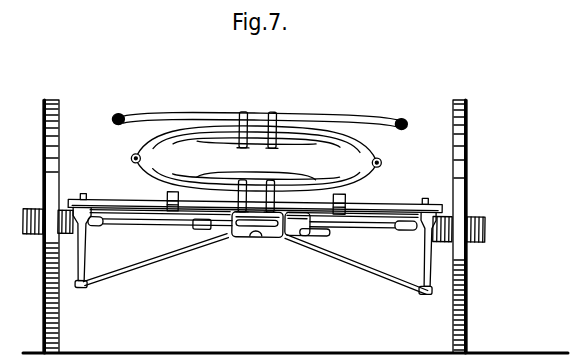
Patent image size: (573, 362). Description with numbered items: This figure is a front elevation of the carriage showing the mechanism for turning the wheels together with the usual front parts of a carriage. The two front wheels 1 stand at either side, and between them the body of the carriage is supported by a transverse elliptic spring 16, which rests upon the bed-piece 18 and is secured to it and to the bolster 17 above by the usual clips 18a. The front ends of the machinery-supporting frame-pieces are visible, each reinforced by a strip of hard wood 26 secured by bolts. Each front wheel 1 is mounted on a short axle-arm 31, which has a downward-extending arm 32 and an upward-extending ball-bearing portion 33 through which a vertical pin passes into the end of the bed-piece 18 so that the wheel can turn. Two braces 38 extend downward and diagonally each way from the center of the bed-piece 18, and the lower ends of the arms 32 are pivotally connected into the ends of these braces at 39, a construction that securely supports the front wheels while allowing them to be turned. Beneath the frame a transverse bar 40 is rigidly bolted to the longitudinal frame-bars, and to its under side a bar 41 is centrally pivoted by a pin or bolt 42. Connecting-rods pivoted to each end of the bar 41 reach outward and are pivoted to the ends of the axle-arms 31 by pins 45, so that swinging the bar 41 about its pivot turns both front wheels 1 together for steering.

The front wheels 1 is at (47, 274).
The transverse elliptic spring 16 is at (146, 158).
The bolster 17 is at (196, 113).
The bed-piece 18 is at (149, 201).
The clips 18a is at (273, 113).
The strip of hard wood 26 is at (171, 194).
The axle-arm 31 is at (143, 222).
The downward-extending arm 32 is at (86, 258).
The ball-bearing portion 33 is at (143, 210).
The braces 38 is at (150, 268).
The pivotal connection 39 is at (87, 290).
The transverse bar 40 is at (253, 224).
The bar 41 is at (293, 242).
The pin or bolt 42 is at (256, 236).
The pins 45 is at (194, 230).